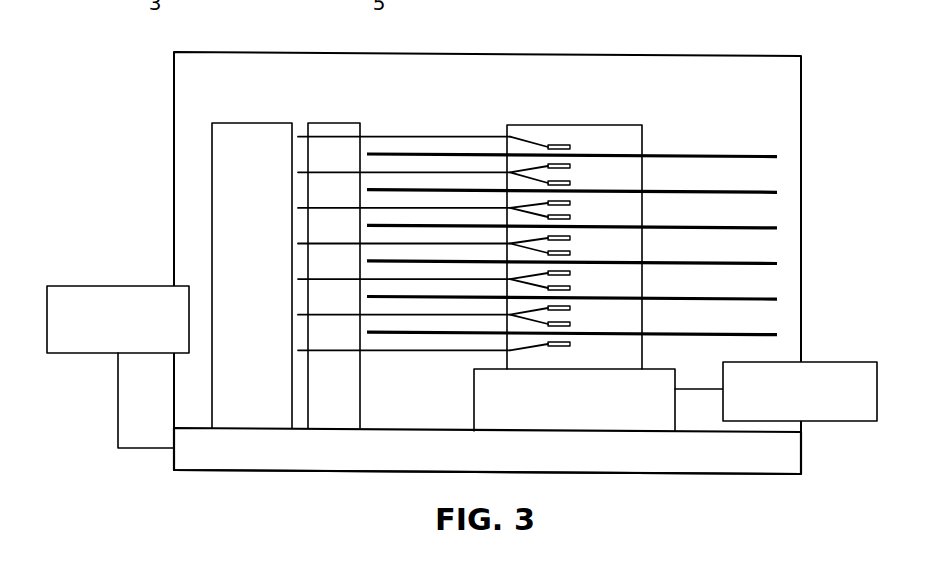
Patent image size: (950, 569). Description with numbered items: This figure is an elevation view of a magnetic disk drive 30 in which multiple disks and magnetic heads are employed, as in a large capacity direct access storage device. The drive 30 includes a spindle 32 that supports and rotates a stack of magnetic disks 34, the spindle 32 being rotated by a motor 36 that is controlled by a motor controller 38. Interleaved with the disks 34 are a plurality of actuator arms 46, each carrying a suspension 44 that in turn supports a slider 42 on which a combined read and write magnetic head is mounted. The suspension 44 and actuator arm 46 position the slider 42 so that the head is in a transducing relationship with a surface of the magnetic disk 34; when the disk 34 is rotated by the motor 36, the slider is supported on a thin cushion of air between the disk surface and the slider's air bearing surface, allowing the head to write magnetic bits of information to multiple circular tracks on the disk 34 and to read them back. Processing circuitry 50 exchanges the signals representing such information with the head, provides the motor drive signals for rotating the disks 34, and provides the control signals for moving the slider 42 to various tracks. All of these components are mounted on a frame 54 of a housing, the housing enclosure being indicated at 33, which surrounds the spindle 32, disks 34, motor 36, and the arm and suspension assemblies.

The magnetic disk drive 30 is at (692, 128).
The spindle 32 is at (630, 125).
The housing 33 is at (741, 52).
The magnetic disk 34 is at (768, 158).
The motor 36 is at (563, 412).
The motor controller 38 is at (837, 421).
The slider 42 is at (578, 163).
The suspension 44 is at (537, 178).
The actuator arm 46 is at (478, 178).
The processing circuitry 50 is at (88, 286).
The frame 54 is at (228, 470).